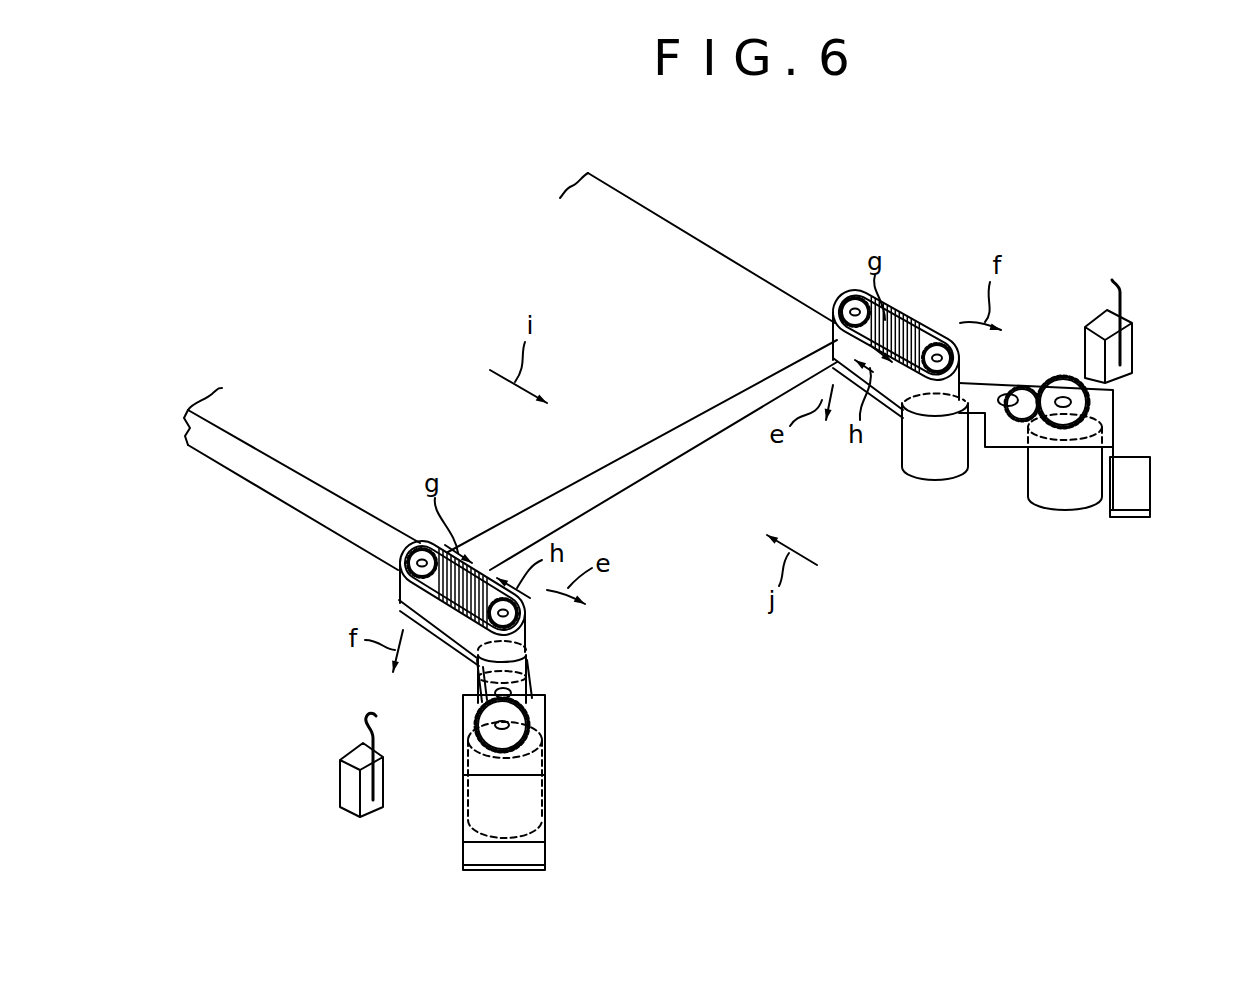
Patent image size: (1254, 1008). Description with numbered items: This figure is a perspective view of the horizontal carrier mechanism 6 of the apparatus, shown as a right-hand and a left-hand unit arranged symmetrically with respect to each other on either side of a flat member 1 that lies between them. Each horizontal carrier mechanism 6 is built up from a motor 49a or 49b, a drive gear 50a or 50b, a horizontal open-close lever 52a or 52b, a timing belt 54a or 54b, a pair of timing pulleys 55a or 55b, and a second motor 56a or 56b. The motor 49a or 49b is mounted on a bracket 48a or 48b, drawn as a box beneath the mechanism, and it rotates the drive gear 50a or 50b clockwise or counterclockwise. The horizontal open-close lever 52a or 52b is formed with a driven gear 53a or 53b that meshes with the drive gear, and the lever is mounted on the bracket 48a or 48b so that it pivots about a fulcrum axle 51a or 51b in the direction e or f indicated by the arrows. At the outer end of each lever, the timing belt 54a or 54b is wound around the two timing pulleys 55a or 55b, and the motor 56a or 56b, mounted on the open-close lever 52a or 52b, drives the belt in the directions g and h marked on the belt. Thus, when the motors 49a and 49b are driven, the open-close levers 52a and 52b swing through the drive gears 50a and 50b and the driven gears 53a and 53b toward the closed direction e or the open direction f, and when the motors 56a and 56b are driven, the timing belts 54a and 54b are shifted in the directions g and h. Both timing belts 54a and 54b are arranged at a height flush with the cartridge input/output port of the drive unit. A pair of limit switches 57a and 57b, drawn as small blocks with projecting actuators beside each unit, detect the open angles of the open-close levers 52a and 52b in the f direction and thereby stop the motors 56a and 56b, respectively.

The board 1 is at (660, 428).
The horizontal carrier mechanism 6 is at (739, 575).
The bracket 48a is at (483, 765).
The bracket 48b is at (1113, 436).
The motor 49a is at (535, 797).
The motor 49b is at (1077, 497).
The drive gear 50a is at (530, 738).
The drive gear 50b is at (1100, 398).
The fulcrum axle 51a is at (465, 703).
The fulcrum axle 51b is at (1015, 427).
The horizontal open-close lever 52a is at (437, 638).
The horizontal open-close lever 52b is at (977, 427).
The driven gear 53a is at (522, 702).
The driven gear 53b is at (1017, 390).
The timing belt 54a is at (465, 564).
The timing belt 54b is at (850, 313).
The timing pulleys 55a is at (397, 575).
The timing pulleys 55b is at (853, 305).
The motor 56a is at (537, 682).
The motor 56b is at (910, 453).
The limit switch 57a is at (345, 786).
The limit switch 57b is at (1135, 342).